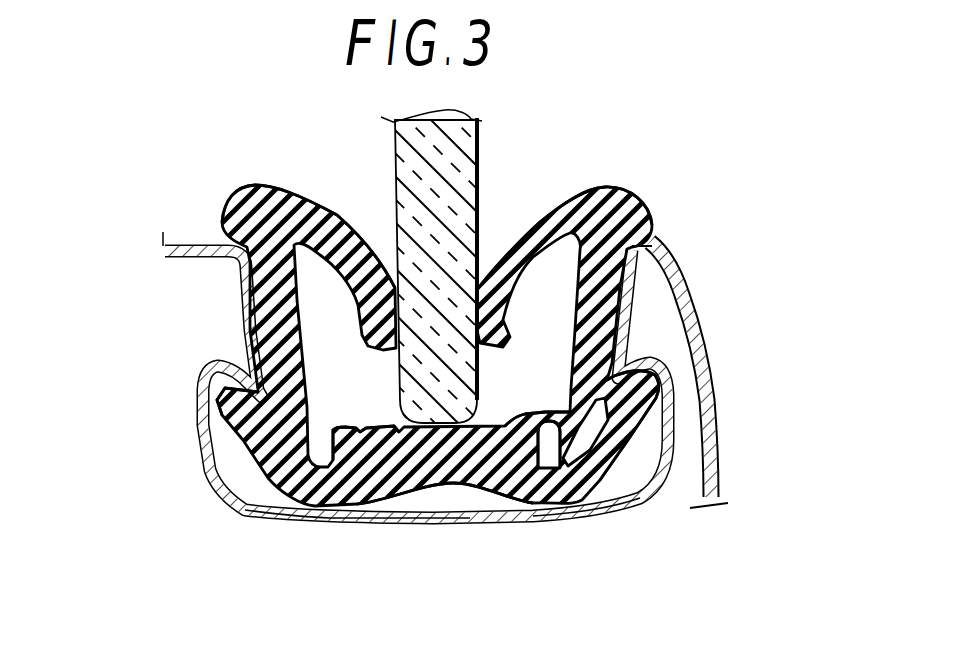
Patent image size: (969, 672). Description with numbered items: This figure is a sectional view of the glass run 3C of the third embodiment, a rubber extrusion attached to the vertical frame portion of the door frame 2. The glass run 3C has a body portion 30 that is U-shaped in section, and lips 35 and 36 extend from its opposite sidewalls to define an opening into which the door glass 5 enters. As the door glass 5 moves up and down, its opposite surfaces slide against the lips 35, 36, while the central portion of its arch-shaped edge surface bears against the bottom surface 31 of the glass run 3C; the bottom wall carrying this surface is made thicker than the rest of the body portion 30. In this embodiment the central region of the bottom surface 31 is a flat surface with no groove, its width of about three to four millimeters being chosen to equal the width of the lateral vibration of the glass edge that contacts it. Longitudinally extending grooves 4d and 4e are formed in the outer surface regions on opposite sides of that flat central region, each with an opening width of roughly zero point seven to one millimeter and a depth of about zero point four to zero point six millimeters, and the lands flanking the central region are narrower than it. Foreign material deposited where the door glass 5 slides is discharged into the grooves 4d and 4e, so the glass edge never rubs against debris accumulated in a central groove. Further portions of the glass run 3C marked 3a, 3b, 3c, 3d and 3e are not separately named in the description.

The door frame 2 is at (703, 298).
The door glass 5 is at (479, 190).
The glass run 3C is at (247, 179).
The bottom wall of glass run 3a is at (497, 418).
The rib on bottom wall 3b is at (340, 430).
The rib on bottom wall 3c is at (373, 426).
The foot portion of glass run 3d is at (653, 492).
The hollow portion of glass run 3e is at (577, 505).
The body portion 30 is at (280, 407).
The bottom surface 31 is at (507, 423).
The lip 35 is at (543, 217).
The lip 36 is at (337, 227).
The groove 4d is at (398, 490).
The groove 4e is at (330, 520).